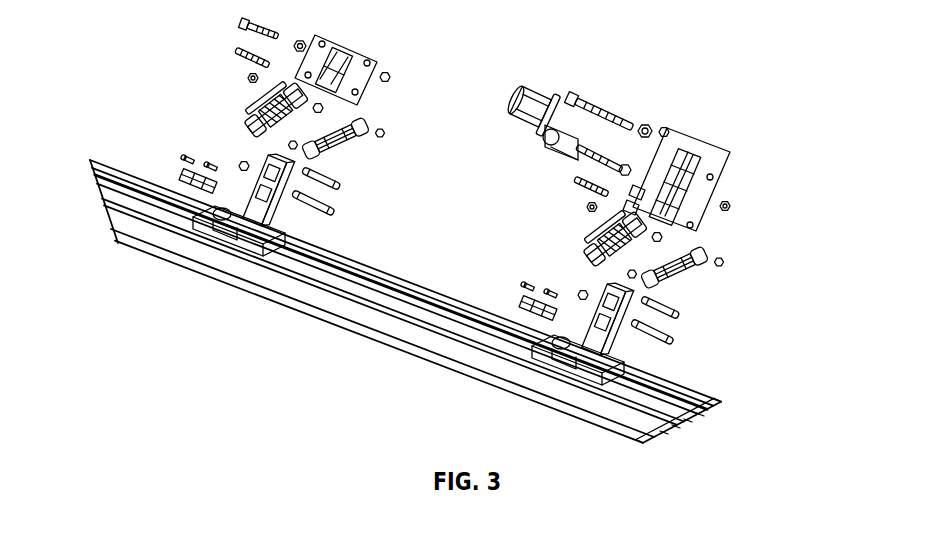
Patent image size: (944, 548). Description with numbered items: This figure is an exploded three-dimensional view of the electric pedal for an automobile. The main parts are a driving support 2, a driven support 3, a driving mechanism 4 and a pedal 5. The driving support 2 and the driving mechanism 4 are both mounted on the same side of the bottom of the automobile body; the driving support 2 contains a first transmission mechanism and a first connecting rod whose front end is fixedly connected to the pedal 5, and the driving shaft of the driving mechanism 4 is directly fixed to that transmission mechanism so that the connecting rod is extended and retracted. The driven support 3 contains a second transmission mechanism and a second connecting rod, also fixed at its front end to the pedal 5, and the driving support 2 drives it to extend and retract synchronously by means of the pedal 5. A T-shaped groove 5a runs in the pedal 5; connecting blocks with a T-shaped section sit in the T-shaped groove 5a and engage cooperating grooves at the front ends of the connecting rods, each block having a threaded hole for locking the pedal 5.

The driving support 2 is at (606, 256).
The driven support 3 is at (277, 137).
The driving mechanism 4 is at (550, 126).
The pedal 5 is at (405, 301).
The T-shaped groove 5a is at (716, 420).